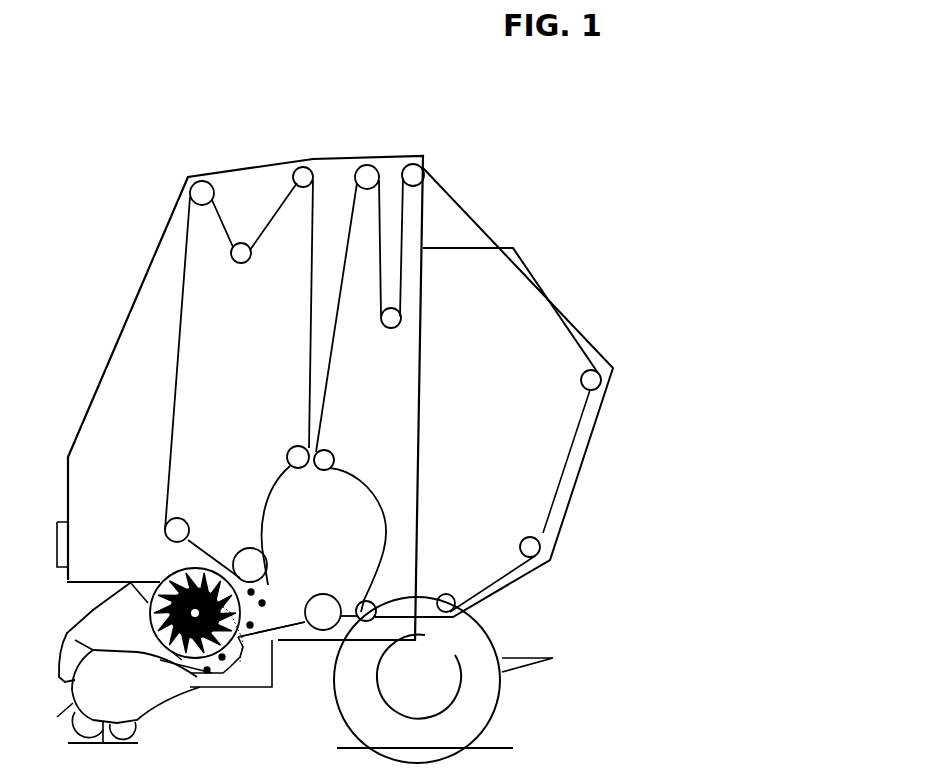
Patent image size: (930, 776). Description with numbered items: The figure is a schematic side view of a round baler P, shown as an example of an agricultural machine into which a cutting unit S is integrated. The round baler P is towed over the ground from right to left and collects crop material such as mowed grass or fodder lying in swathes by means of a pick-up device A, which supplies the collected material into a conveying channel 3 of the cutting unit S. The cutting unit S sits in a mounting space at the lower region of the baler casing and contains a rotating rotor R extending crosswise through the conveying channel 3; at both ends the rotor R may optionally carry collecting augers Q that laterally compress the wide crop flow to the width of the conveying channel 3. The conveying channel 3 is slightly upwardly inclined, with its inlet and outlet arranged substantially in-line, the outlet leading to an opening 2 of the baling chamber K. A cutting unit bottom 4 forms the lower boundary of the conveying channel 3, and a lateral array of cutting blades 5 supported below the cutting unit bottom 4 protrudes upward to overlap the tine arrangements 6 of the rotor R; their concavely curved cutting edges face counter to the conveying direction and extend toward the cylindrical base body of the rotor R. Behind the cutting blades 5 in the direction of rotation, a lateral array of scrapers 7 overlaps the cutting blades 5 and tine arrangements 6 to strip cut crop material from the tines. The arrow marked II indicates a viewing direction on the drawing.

The round baler P is at (304, 145).
The cutting unit S is at (162, 566).
The collecting augers Q is at (217, 564).
The baling chamber K is at (345, 498).
The rotor R is at (157, 605).
The pick-up device A is at (133, 687).
The viewing direction of FIG. 2 II is at (276, 594).
The scrapers 7 is at (251, 592).
The opening 2 is at (262, 603).
The conveying channel 3 is at (250, 625).
The cutting unit bottom 4 is at (222, 657).
The cutting blades 5 is at (207, 670).
The tine arrangements 6 is at (172, 652).